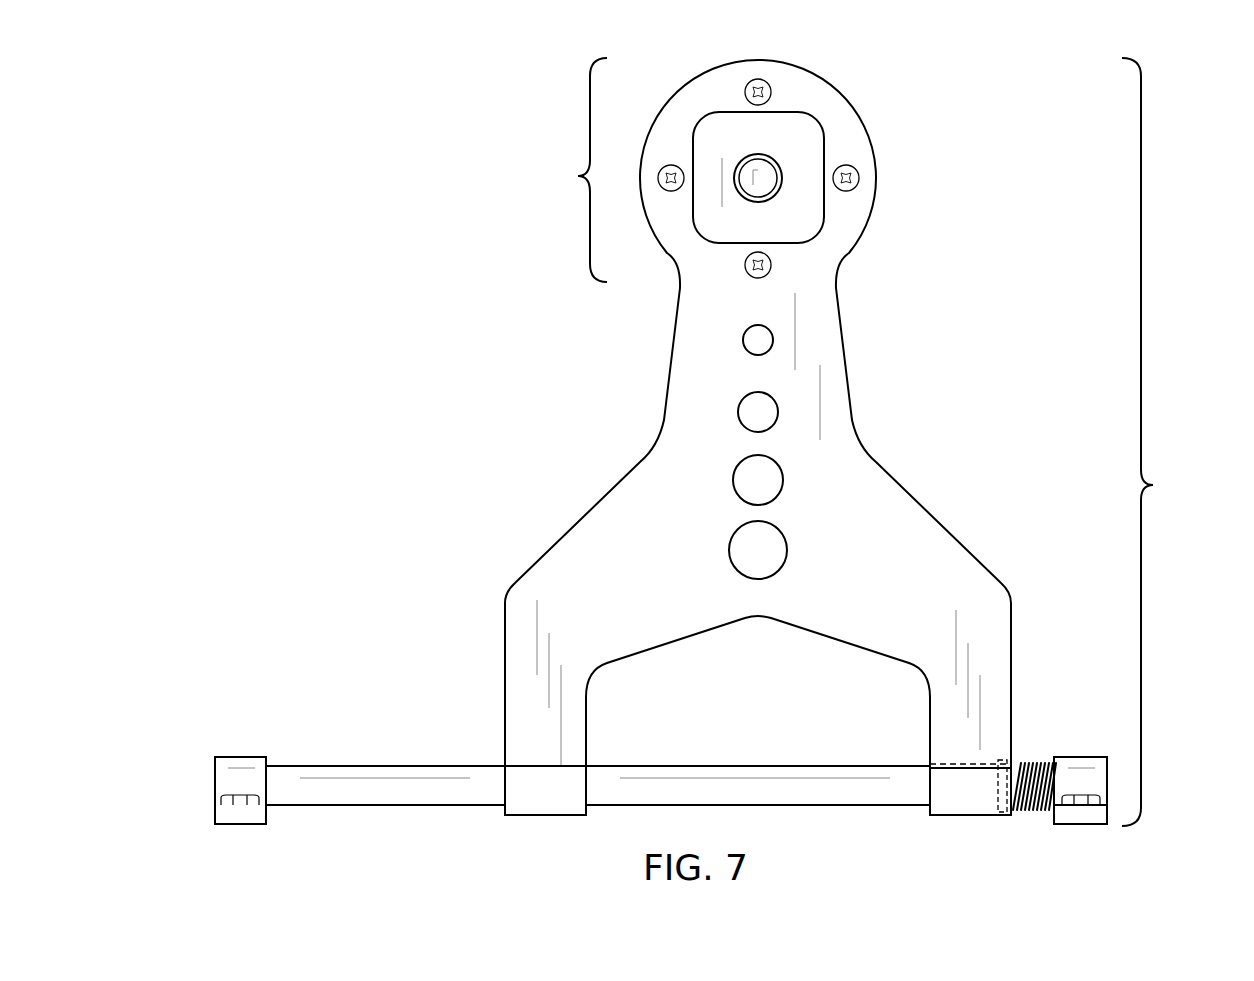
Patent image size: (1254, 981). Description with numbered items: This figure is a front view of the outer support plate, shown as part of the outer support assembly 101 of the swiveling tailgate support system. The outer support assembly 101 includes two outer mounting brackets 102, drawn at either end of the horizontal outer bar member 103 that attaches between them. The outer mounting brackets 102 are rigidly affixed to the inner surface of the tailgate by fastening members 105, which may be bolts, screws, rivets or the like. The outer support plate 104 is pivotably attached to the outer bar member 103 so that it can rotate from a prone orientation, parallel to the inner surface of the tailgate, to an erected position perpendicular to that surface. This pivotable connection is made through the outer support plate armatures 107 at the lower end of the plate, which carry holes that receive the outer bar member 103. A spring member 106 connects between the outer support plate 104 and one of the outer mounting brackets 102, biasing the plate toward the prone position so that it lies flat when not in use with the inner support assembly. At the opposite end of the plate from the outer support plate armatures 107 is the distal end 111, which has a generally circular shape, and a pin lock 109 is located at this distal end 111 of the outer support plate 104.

The outer support assembly 101 is at (1172, 442).
The outer mounting brackets 102 is at (234, 818).
The outer bar member 103 is at (366, 765).
The outer support plate 104 is at (557, 535).
The fastening members 105 is at (240, 797).
The spring member 106 is at (1025, 760).
The outer support plate armatures 107 is at (545, 816).
The pin lock 109 is at (771, 162).
The distal end 111 is at (685, 170).